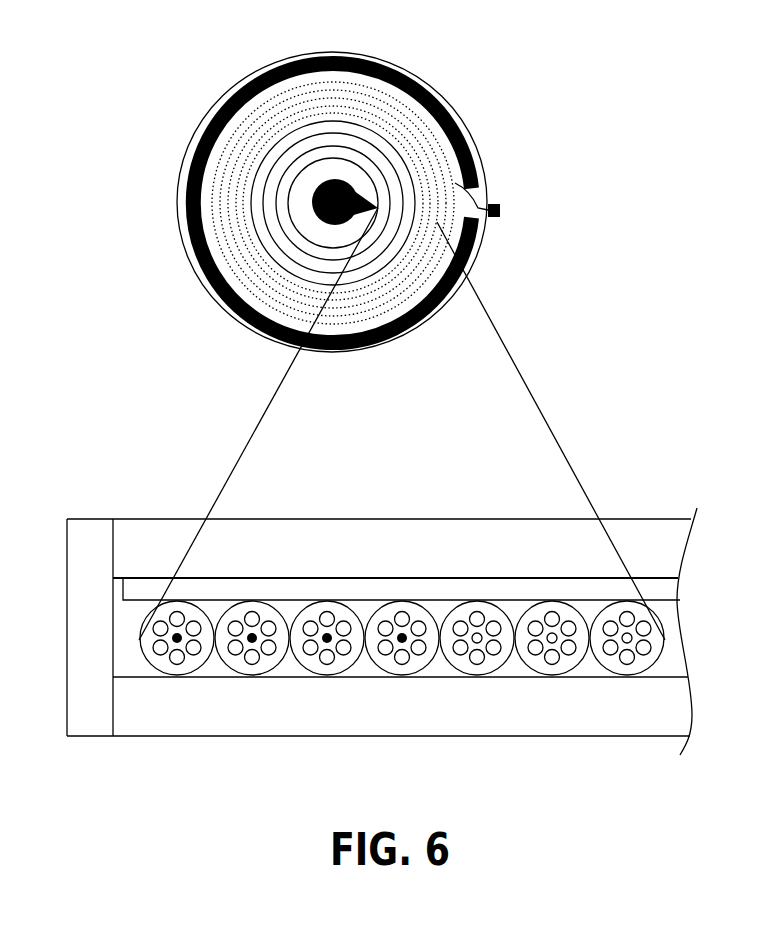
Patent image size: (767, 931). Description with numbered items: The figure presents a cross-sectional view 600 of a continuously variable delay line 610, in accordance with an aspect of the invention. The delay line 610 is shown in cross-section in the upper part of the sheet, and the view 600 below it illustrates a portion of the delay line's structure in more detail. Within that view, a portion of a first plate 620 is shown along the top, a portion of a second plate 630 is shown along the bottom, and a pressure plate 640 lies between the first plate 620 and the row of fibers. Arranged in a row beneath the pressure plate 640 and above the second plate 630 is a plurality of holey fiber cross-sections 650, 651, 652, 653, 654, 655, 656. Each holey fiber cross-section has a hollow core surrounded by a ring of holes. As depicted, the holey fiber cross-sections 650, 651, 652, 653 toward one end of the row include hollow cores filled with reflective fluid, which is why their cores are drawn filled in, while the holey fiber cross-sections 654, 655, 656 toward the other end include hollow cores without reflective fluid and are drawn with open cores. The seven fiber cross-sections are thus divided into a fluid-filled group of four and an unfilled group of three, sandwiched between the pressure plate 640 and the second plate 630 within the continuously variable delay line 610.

The cross-sectional view 600 is at (654, 478).
The continuously variable delay line 610 is at (428, 87).
The first plate 620 is at (343, 520).
The second plate 630 is at (677, 703).
The pressure plate 640 is at (435, 588).
The holey fiber cross-section 650 is at (178, 673).
The holey fiber cross-section 651 is at (253, 673).
The holey fiber cross-section 652 is at (328, 673).
The holey fiber cross-section 653 is at (403, 673).
The holey fiber cross-section 654 is at (479, 673).
The holey fiber cross-section 655 is at (554, 673).
The holey fiber cross-section 656 is at (630, 673).